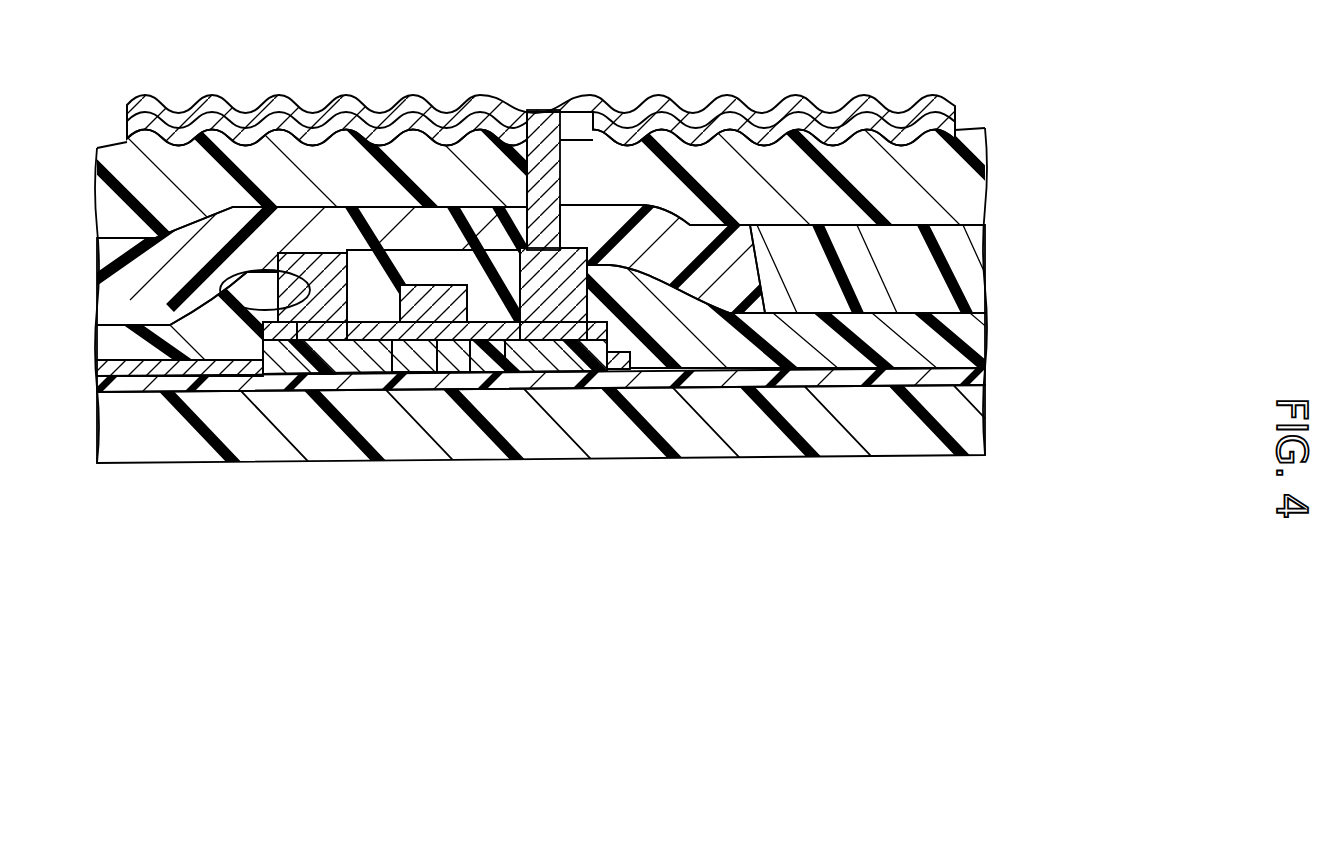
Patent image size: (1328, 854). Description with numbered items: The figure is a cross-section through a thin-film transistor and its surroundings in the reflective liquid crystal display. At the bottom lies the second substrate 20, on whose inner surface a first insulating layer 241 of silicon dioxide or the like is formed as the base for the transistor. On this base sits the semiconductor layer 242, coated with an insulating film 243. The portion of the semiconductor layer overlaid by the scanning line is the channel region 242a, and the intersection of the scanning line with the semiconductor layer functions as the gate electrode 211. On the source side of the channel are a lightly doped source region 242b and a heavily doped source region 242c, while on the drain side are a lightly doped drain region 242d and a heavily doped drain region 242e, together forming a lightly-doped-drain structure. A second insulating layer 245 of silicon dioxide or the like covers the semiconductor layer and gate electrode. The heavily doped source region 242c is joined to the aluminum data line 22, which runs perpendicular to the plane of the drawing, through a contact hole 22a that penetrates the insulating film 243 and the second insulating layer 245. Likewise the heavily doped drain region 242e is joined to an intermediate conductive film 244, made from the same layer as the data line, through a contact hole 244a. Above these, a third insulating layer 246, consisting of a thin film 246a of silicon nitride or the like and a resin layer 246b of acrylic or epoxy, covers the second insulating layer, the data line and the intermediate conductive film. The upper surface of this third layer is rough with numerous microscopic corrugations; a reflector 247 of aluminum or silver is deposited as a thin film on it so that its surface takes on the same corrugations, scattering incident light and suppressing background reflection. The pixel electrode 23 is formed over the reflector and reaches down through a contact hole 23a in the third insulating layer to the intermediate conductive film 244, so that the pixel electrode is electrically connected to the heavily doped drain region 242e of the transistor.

The second substrate 20 is at (955, 415).
The first insulating layer 241 is at (960, 373).
The semiconductor layer 242 is at (441, 464).
The channel region 242a is at (433, 372).
The lightly doped source region 242b is at (387, 376).
The heavily doped source region 242c is at (305, 376).
The lightly doped drain region 242d is at (487, 360).
The heavily doped drain region 242e is at (582, 427).
The insulating film 243 is at (133, 360).
The data line 22 is at (337, 262).
The contact hole 22a is at (220, 287).
The gate electrode 211 is at (443, 288).
The intermediate conductive film 244 is at (640, 235).
The contact hole 244a is at (563, 284).
The second insulating layer 245 is at (950, 335).
The third insulating layer 246 is at (1118, 152).
The thin film 246a is at (950, 268).
The resin layer 246b is at (950, 190).
The reflector 247 is at (727, 92).
The pixel electrode 23 is at (870, 95).
The contact hole 23a is at (535, 135).